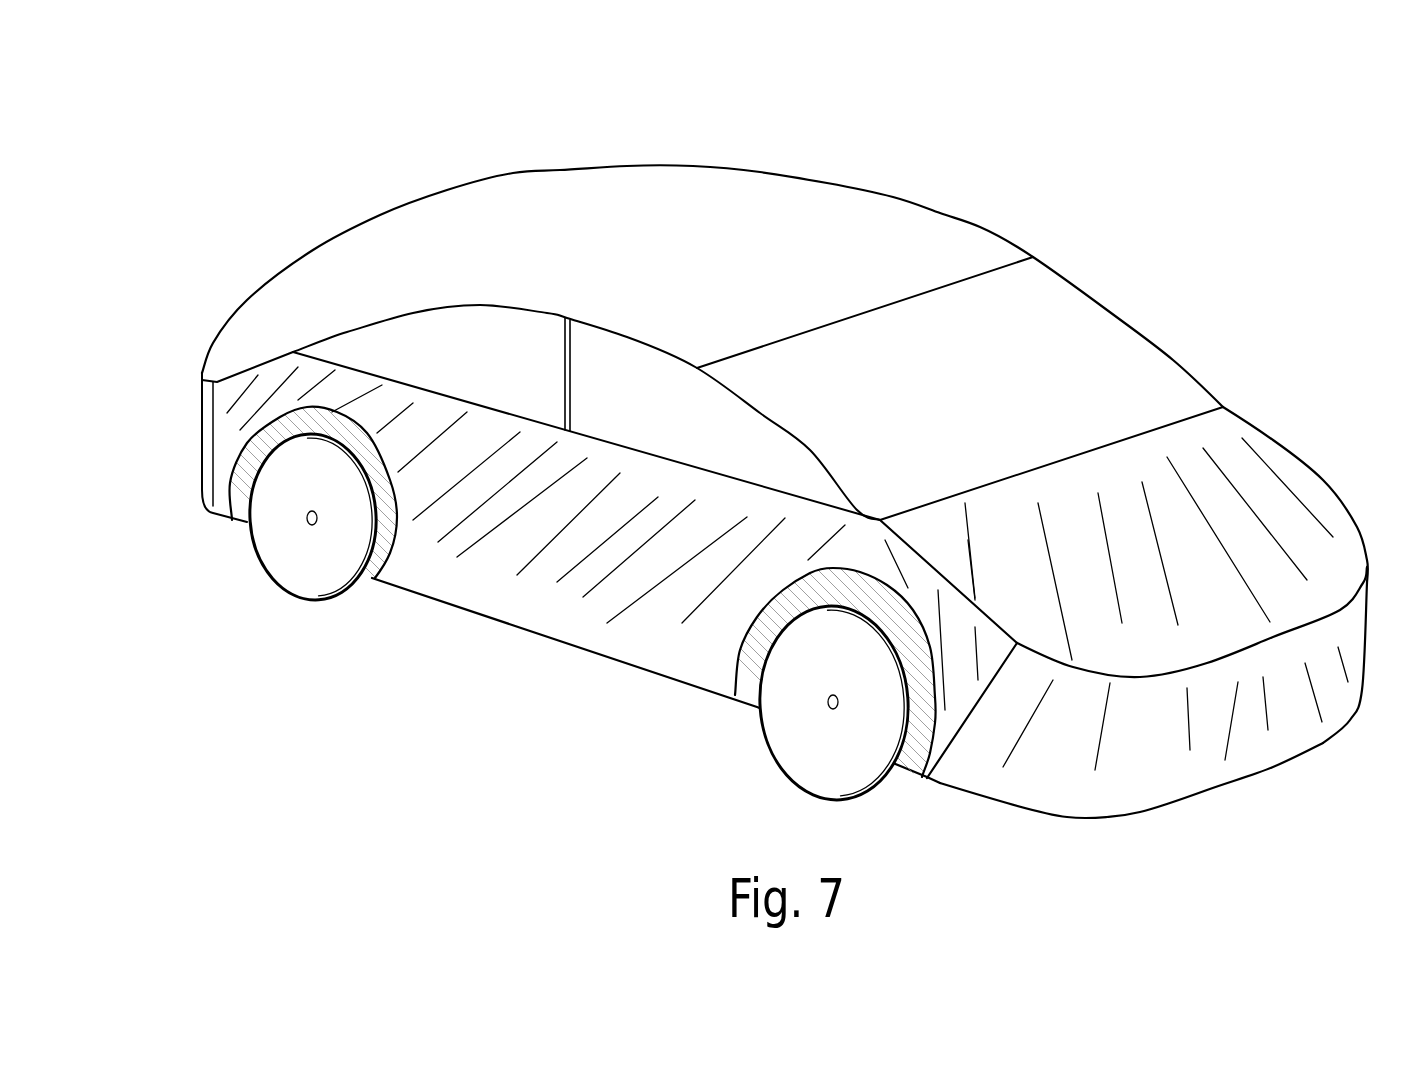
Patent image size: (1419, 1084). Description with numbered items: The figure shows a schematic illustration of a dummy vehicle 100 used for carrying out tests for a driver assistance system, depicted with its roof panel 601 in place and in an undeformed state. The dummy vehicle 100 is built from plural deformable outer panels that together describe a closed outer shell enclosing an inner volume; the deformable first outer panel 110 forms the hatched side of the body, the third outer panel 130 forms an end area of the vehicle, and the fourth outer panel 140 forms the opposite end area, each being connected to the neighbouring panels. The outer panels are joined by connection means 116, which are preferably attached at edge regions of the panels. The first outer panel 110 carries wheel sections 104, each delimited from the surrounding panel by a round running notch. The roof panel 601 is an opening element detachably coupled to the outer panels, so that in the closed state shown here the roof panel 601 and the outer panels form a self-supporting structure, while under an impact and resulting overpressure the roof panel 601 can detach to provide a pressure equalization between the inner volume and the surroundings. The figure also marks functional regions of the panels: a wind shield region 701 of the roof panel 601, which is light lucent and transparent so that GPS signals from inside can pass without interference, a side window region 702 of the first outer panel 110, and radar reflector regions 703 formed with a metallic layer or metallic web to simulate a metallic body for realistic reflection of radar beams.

The dummy vehicle 100 is at (1217, 221).
The roof panel 601 is at (737, 233).
The wind shield region 701 is at (982, 393).
The side window region 702 is at (658, 402).
The radar reflector region 703 is at (593, 590).
The fourth outer panel 140 is at (203, 446).
The connection means 116 is at (215, 513).
The wheel section 104 is at (305, 568).
The first outer panel 110 is at (517, 593).
The third outer panel 130 is at (1187, 747).